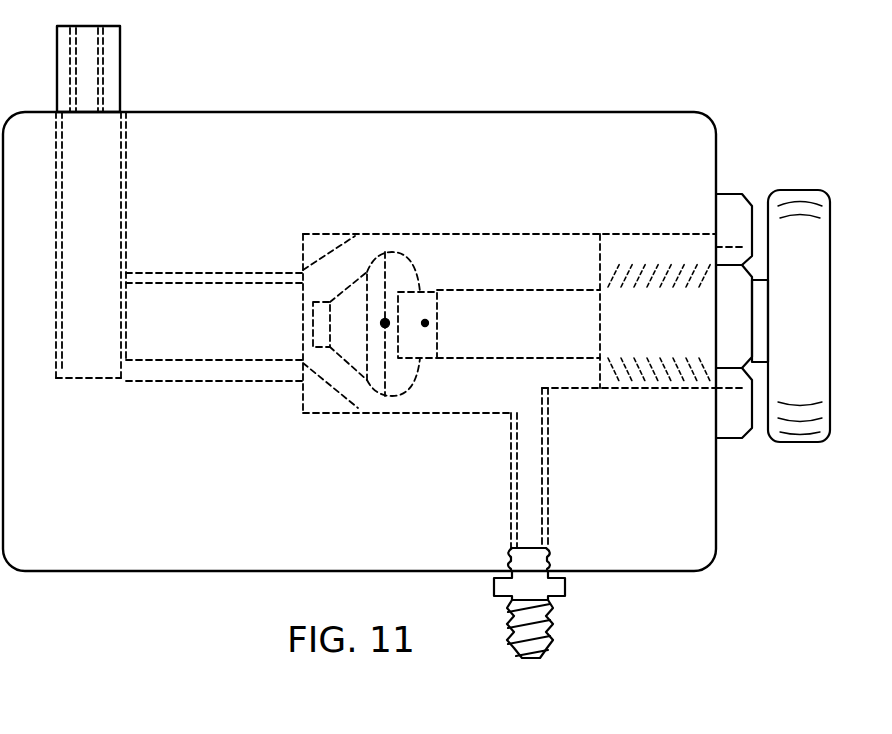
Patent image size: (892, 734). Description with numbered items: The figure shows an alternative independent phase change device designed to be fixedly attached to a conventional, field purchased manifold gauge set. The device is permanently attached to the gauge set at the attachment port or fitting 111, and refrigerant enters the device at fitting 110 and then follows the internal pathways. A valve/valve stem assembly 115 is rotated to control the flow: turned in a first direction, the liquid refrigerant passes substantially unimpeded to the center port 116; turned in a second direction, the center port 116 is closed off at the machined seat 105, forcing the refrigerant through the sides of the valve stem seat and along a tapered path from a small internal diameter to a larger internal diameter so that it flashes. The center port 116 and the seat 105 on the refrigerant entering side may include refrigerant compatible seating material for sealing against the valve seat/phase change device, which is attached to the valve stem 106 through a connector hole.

The machined seat 105 is at (337, 382).
The valve stem 106 is at (510, 313).
The fitting 110 is at (550, 645).
The attachment port 111 is at (120, 44).
The valve/valve stem assembly 115 is at (763, 295).
The center port 116 is at (213, 340).